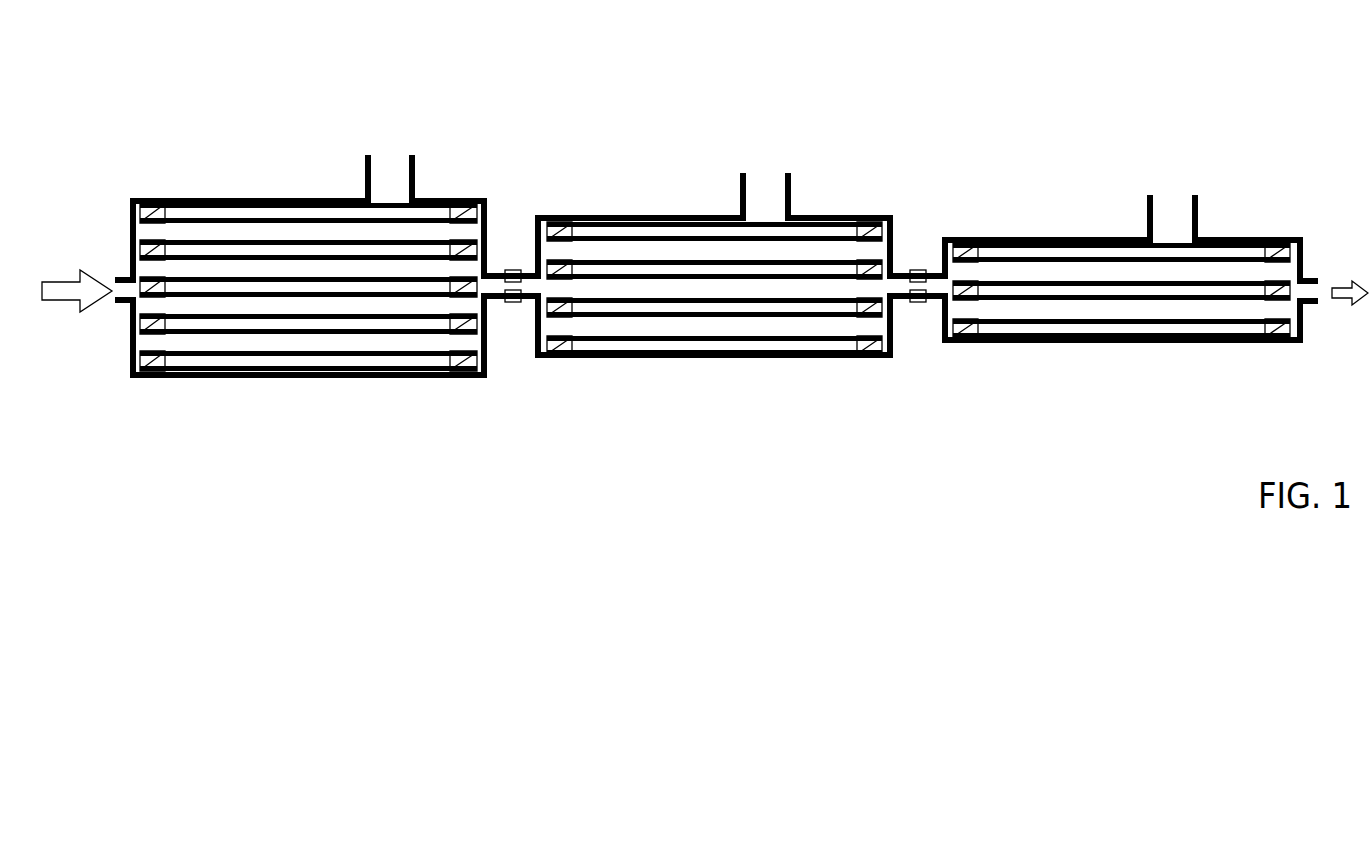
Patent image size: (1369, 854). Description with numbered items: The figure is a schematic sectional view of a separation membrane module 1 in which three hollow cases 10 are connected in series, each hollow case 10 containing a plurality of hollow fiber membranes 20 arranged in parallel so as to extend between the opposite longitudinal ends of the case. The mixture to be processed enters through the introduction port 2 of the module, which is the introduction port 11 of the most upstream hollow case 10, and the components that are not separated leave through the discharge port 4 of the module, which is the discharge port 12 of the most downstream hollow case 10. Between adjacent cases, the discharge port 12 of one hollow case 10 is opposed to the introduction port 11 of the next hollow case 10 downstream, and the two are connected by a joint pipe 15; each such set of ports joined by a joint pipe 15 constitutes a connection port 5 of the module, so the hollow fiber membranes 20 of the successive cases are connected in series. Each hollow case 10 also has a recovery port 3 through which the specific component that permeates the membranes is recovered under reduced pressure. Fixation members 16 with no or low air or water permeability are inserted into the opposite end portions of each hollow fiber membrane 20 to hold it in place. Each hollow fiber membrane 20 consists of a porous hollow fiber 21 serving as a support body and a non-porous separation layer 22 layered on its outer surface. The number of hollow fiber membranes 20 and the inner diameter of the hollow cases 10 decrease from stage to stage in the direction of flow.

The separation membrane module 1 is at (618, 76).
The introduction port 2 is at (124, 298).
The recovery port 3 is at (412, 170).
The discharge port 4 is at (1330, 300).
The connection port 5 is at (517, 300).
The hollow case 10 is at (243, 200).
The introduction port 11 is at (87, 336).
The discharge port 12 is at (1324, 340).
The joint pipe 15 is at (513, 270).
The fixation member 16 is at (158, 210).
The hollow fiber membrane 20 is at (715, 348).
The hollow fiber 21 is at (272, 266).
The separation layer 22 is at (302, 262).